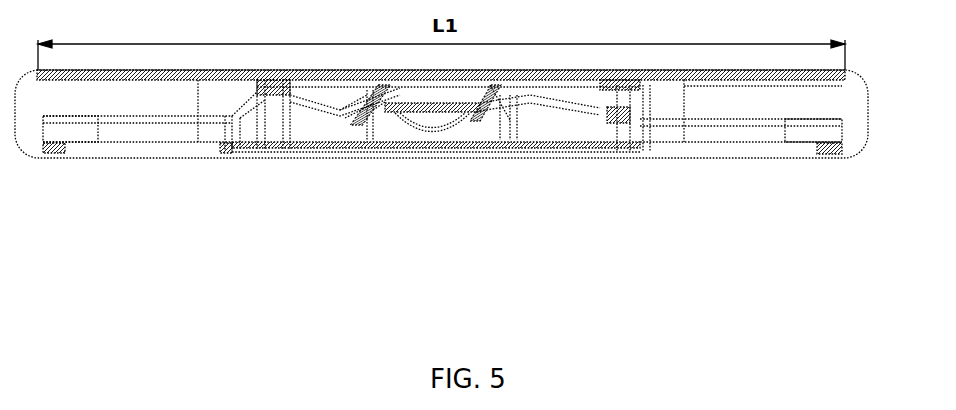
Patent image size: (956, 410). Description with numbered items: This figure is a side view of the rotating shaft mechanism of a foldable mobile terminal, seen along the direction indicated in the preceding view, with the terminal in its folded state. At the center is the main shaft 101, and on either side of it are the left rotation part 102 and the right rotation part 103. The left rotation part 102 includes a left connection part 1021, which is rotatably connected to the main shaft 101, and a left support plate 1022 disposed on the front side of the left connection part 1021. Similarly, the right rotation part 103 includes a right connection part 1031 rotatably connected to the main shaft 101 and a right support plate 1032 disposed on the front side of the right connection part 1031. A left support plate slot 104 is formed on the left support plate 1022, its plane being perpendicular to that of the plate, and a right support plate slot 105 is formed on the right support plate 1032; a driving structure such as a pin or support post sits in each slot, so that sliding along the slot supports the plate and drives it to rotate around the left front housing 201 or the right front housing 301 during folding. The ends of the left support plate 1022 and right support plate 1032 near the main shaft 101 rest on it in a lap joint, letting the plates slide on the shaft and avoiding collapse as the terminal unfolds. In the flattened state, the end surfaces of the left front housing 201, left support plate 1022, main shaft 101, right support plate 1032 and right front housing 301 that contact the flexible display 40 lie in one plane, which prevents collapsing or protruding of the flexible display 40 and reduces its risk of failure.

The left front housing 201 is at (84, 92).
The right front housing 301 is at (840, 99).
The flexible display 40 is at (473, 75).
The left rotation part 102 is at (302, 204).
The left support plate 1022 is at (285, 83).
The left connection part 1021 is at (298, 110).
The left support plate slot 104 is at (346, 98).
The main shaft 101 is at (442, 103).
The right support plate slot 105 is at (537, 98).
The right rotation part 103 is at (649, 198).
The right connection part 1031 is at (593, 113).
The right support plate 1032 is at (607, 82).